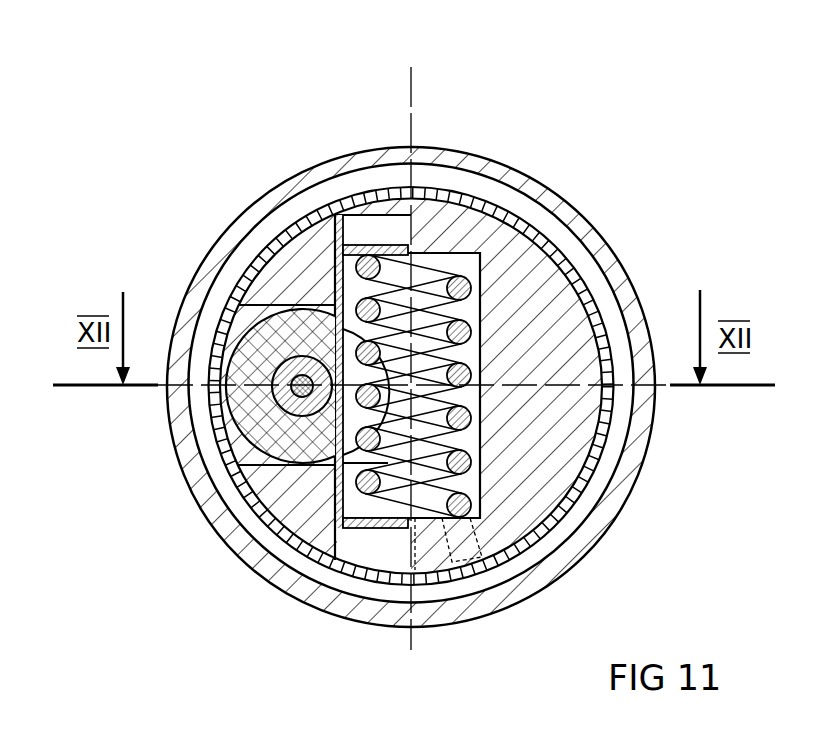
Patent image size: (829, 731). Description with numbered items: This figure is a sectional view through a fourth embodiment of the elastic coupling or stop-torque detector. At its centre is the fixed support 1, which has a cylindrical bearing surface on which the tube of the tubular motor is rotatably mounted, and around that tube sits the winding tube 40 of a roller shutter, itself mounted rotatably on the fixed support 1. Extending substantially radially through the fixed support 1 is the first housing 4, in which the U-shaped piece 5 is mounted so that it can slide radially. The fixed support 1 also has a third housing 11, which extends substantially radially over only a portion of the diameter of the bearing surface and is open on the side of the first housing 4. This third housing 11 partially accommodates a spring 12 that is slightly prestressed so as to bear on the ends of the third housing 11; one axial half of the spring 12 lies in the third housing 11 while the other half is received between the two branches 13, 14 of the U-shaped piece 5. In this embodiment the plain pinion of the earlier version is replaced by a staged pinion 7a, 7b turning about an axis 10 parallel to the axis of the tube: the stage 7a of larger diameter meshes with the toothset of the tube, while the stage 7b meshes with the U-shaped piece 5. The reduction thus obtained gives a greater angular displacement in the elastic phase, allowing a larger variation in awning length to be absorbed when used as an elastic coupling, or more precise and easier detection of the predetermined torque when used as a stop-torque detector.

The fixed support 1 is at (565, 418).
The first housing 4 is at (377, 218).
The U-shaped piece 5 is at (300, 497).
The stage of larger diameter of staged pinion 7a is at (225, 340).
The stage of staged pinion 7b is at (262, 312).
The axis of the pinion 10 is at (290, 400).
The third housing 11 is at (467, 308).
The spring 12 is at (437, 280).
The branch of the U-shaped piece 13 is at (396, 246).
The branch of the U-shaped piece 14 is at (368, 523).
The winding tube 40 is at (580, 542).